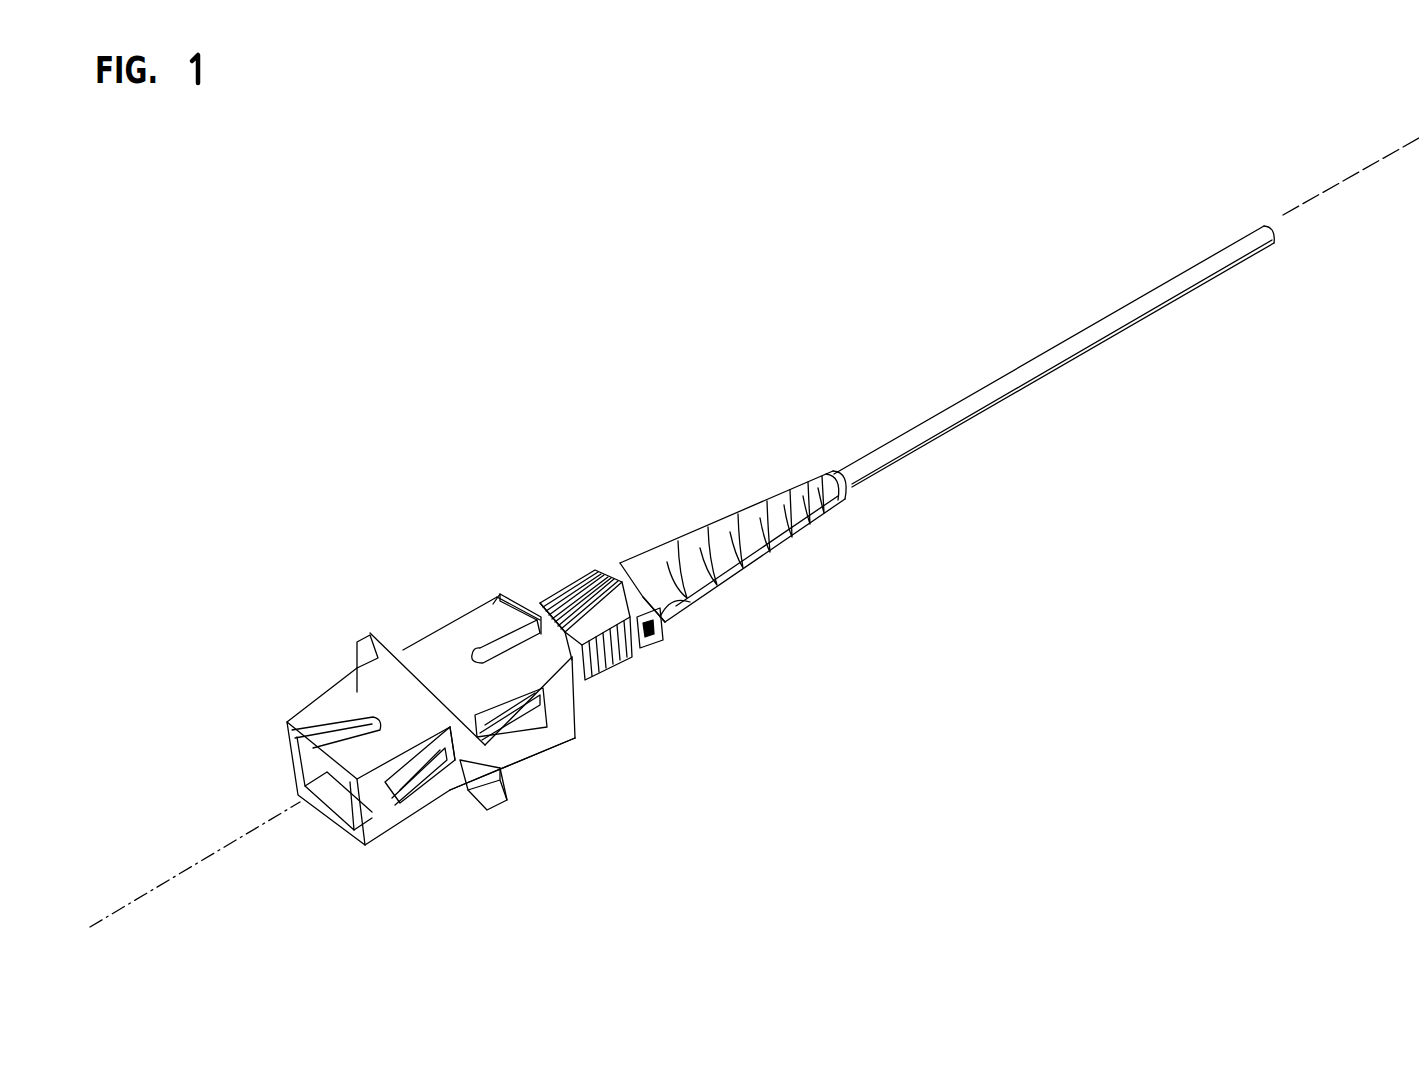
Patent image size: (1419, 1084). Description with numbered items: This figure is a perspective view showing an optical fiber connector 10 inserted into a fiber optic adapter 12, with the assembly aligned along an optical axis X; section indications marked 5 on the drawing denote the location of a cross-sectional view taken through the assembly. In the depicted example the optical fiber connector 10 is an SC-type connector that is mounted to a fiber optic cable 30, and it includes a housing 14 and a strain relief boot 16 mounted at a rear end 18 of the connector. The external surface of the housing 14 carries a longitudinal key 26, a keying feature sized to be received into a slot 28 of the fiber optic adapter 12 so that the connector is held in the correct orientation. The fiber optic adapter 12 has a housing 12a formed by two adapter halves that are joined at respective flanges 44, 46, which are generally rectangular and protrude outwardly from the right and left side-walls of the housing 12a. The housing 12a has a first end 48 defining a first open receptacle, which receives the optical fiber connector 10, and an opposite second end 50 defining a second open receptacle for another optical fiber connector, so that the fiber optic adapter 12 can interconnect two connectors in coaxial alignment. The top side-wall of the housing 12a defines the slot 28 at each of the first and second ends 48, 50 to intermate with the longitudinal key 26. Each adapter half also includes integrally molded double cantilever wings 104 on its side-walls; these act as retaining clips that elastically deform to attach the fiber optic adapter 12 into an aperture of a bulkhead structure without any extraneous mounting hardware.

The section line 5- 5 is at (206, 857).
The optical fiber connector 10 is at (628, 552).
The fiber optic adapter 12 is at (420, 618).
The housing 12a is at (356, 686).
The housing 14 is at (543, 600).
The strain relief boot 16 is at (748, 507).
The rear end 18 is at (676, 660).
The longitudinal key 26 is at (503, 620).
The slot 28 is at (338, 725).
The fiber optic cable 30 is at (1008, 380).
The flange 44 is at (353, 655).
The flange 46 is at (376, 629).
The first end 48 is at (374, 858).
The second end 50 is at (579, 742).
The double cantilever wings 104 is at (427, 800).